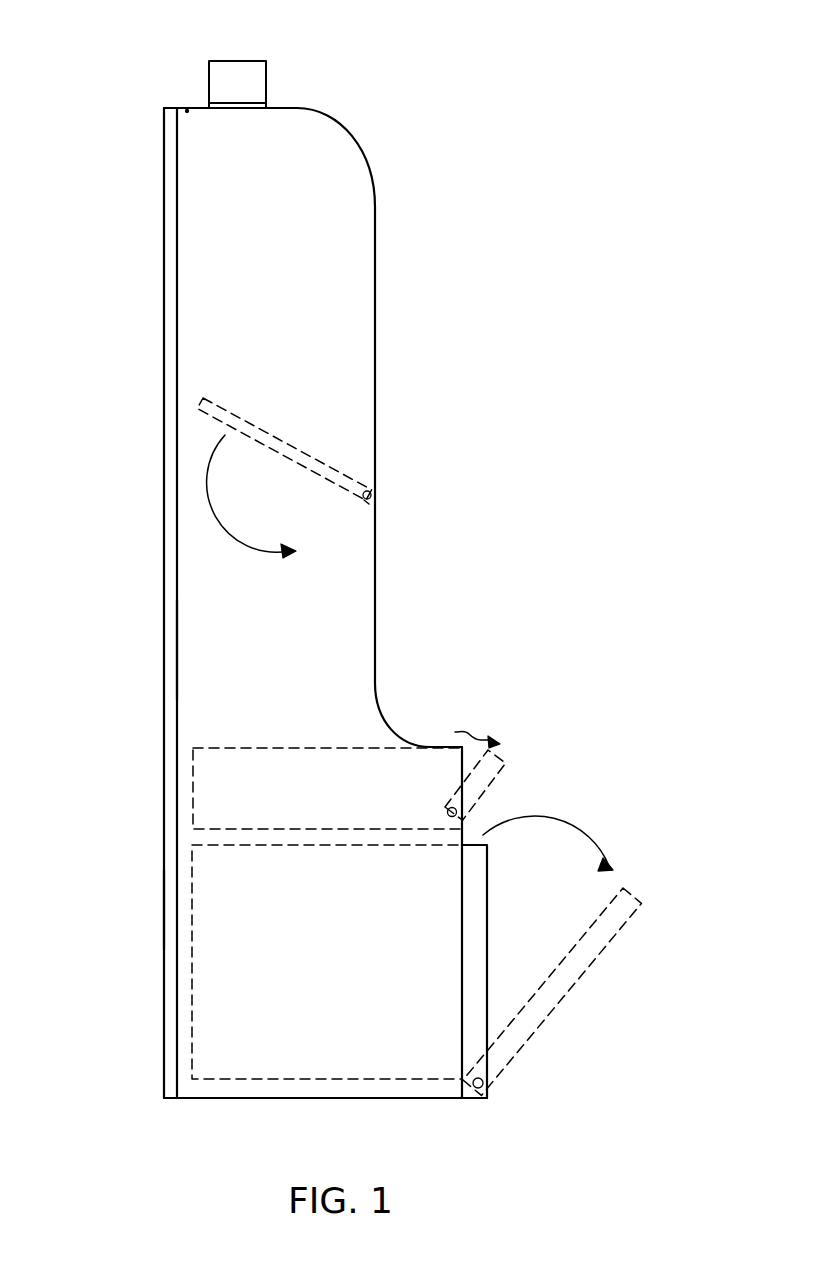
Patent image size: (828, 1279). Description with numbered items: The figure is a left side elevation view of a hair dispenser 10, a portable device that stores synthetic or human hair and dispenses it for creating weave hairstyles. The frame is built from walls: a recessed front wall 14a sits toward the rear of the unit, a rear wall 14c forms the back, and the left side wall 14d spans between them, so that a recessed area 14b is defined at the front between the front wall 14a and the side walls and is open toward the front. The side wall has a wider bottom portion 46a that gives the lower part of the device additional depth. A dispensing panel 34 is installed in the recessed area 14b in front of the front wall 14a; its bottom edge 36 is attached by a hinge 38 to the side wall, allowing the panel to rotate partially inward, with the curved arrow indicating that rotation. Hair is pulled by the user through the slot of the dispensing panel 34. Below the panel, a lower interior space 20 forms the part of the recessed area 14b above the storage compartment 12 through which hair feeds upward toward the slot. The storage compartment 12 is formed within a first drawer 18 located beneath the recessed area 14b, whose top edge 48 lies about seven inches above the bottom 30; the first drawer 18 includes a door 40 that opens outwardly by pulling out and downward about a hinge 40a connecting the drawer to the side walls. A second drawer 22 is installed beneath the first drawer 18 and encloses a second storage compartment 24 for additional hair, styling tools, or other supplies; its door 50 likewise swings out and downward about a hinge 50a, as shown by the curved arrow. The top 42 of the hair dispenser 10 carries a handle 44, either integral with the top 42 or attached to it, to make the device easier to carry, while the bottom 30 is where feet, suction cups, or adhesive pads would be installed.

The hair dispenser 10 is at (575, 270).
The storage compartment 12 is at (207, 795).
The front wall 14a is at (178, 330).
The recessed area 14b is at (293, 615).
The rear wall 14c is at (163, 292).
The left side wall 14d is at (197, 178).
The first drawer 18 is at (462, 787).
The lower interior space 20 is at (207, 648).
The second drawer 22 is at (487, 903).
The second storage compartment 24 is at (207, 991).
The bottom 30 is at (420, 1100).
The dispensing panel 34 is at (265, 426).
The bottom edge 36 is at (362, 506).
The hinge 38 is at (368, 497).
The door 40 is at (506, 764).
The hinge 40a is at (446, 814).
The top 42 is at (286, 108).
The handle 44 is at (235, 60).
The wider bottom portion 46a is at (164, 905).
The top edge 48 is at (470, 732).
The door 50 is at (597, 960).
The hinge 50a is at (484, 1085).